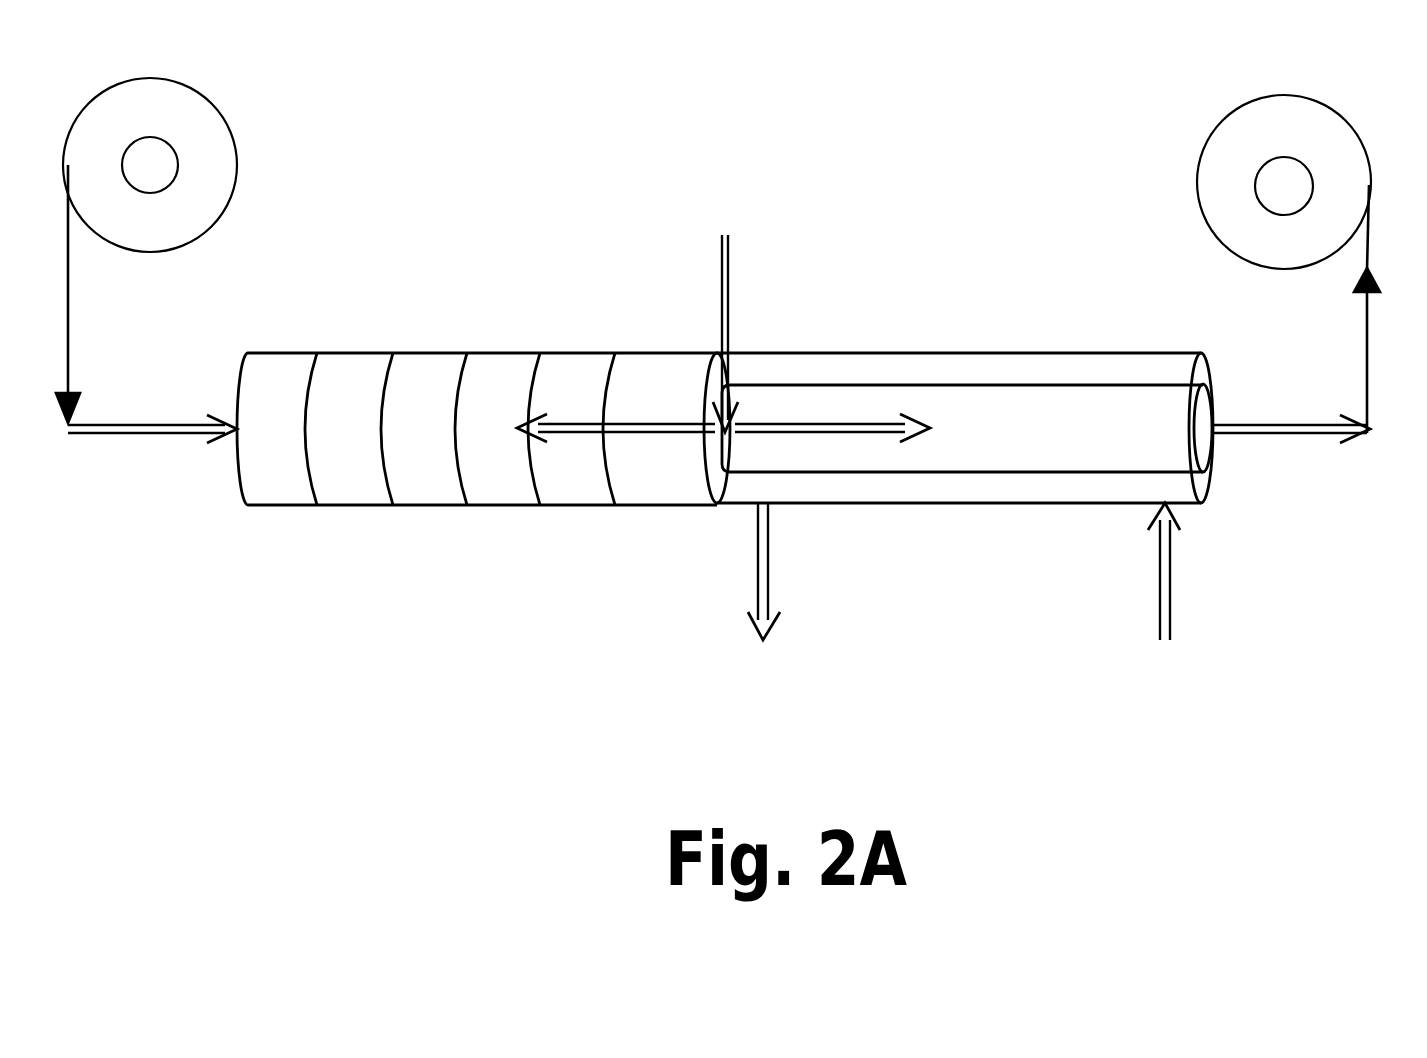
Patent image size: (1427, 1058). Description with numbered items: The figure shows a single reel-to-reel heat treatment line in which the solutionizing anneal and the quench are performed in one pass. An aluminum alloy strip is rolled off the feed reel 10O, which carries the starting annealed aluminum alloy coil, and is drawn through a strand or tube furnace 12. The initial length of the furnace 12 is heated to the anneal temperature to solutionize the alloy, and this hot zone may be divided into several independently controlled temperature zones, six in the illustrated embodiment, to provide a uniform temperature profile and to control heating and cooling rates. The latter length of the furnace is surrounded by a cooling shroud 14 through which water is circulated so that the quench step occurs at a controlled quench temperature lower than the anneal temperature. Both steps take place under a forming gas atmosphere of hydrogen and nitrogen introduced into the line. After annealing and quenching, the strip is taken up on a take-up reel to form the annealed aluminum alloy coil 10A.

The feed reel 10O is at (222, 112).
The annealed aluminum alloy coil 10A is at (1227, 118).
The strand furnace 12 is at (512, 353).
The cooling shroud 14 is at (1033, 355).